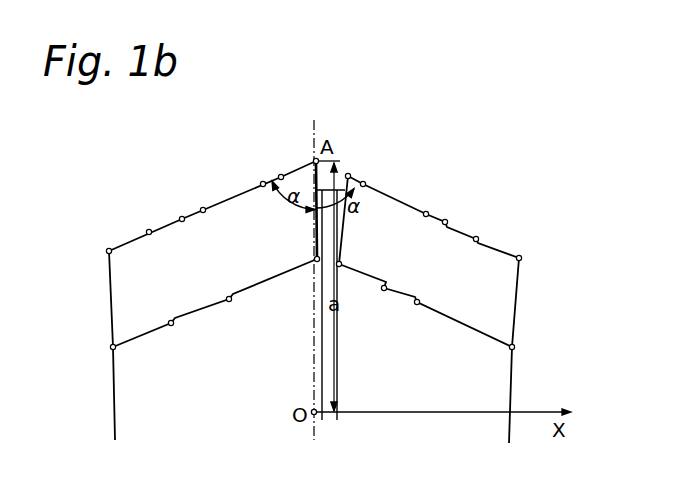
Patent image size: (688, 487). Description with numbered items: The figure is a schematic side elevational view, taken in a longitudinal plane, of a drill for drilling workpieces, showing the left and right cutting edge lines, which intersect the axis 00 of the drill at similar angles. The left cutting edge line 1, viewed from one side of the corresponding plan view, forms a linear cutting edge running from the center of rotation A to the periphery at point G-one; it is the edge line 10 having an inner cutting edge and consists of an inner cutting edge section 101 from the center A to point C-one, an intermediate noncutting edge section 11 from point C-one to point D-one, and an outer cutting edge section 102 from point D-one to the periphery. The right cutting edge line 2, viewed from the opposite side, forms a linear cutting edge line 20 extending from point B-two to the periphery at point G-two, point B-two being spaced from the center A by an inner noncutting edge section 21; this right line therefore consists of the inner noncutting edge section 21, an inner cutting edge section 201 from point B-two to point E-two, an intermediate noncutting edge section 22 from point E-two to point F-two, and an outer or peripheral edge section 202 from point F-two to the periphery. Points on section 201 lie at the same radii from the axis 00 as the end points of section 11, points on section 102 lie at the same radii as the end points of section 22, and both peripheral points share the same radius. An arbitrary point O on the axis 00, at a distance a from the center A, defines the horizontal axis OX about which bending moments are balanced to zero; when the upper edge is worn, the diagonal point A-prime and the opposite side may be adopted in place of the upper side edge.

The first plate 1 is at (207, 272).
The second plate 2 is at (444, 258).
The first edge portion 10 is at (212, 177).
The inner cutting edge section 101 is at (314, 160).
The outer cutting edge section 102 is at (165, 217).
The intermediate noncutting edge section 11 is at (222, 206).
The second edge portion 20 is at (449, 166).
The inner noncutting edge section 21 is at (347, 172).
The inner cutting edge section 201 is at (396, 200).
The intermediate noncutting edge section 22 is at (474, 206).
The outer or peripheral edge section 202 is at (503, 243).
The axis of the drill 00 is at (313, 135).